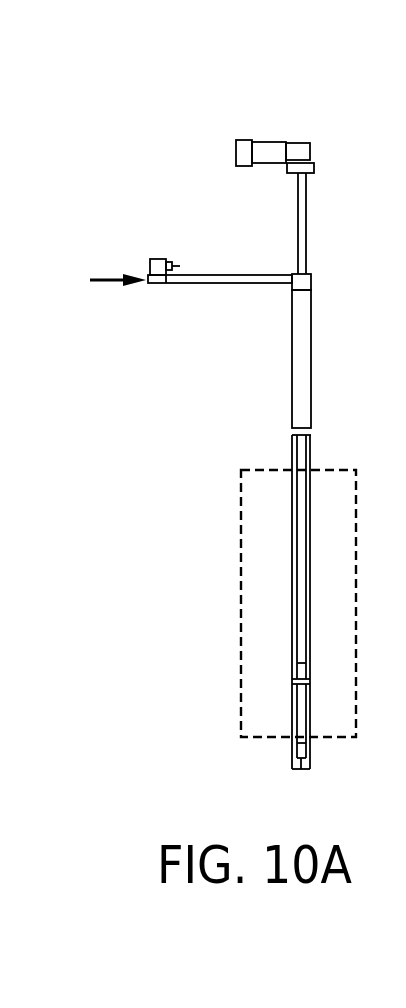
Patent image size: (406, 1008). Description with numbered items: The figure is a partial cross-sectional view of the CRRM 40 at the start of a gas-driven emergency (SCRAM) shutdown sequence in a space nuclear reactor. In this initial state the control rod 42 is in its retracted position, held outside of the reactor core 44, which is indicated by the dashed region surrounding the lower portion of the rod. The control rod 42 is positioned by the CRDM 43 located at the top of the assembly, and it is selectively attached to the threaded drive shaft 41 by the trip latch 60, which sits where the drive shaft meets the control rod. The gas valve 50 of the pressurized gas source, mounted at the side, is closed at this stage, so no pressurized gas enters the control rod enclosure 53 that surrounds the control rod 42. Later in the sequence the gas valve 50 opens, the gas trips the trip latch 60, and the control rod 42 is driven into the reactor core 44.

The CRRM 40 is at (247, 407).
The CRDM 43 is at (263, 142).
The threaded drive shaft 41 is at (307, 219).
The trip latch 60 is at (312, 281).
The gas valve 50 is at (163, 259).
The control rod 42 is at (292, 337).
The control rod enclosure 53 is at (304, 529).
The reactor core 44 is at (241, 510).